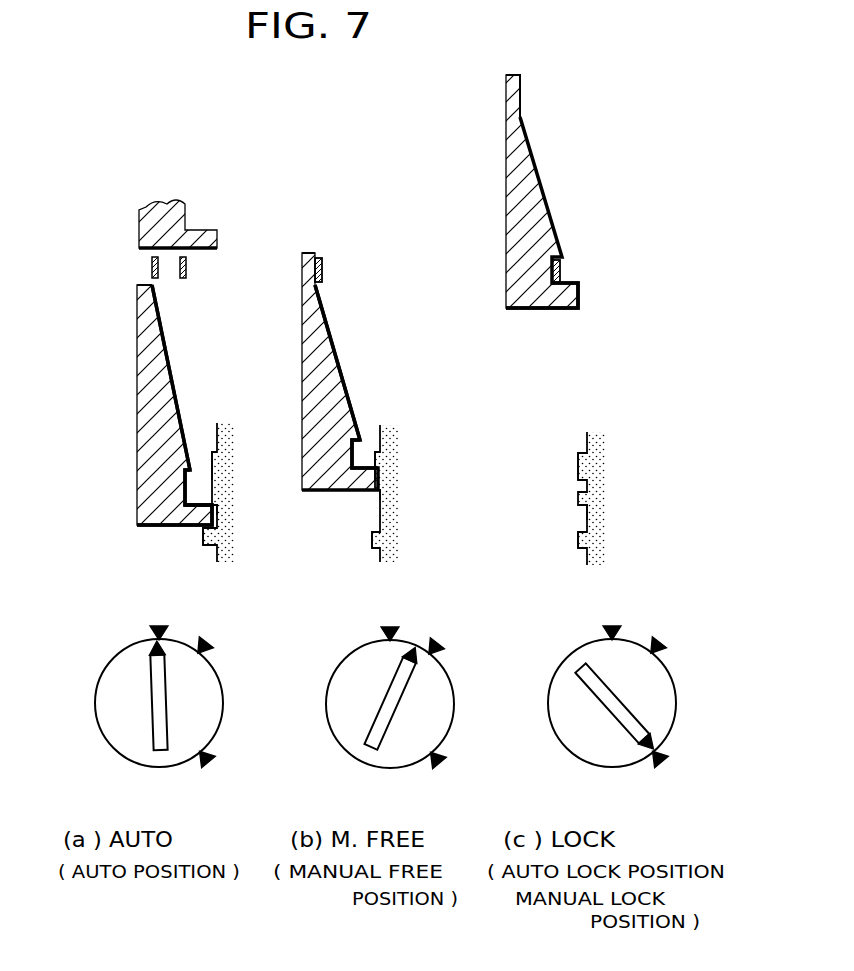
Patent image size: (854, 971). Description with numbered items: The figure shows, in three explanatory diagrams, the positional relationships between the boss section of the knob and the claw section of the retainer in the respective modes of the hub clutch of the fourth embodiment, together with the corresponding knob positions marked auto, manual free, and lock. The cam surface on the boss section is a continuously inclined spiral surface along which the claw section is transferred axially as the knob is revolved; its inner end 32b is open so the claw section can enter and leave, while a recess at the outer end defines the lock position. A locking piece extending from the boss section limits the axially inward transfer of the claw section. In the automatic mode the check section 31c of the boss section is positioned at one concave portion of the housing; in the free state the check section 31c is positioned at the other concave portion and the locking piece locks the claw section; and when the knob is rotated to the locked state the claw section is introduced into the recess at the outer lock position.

The check section 31c is at (186, 512).
The inner end 32b is at (140, 263).